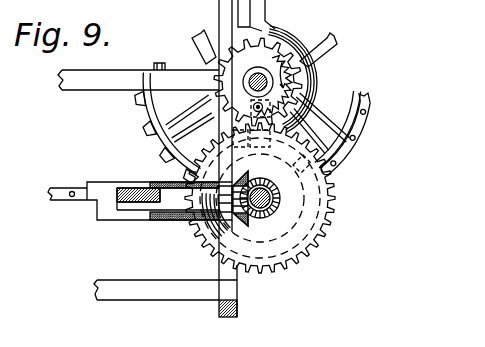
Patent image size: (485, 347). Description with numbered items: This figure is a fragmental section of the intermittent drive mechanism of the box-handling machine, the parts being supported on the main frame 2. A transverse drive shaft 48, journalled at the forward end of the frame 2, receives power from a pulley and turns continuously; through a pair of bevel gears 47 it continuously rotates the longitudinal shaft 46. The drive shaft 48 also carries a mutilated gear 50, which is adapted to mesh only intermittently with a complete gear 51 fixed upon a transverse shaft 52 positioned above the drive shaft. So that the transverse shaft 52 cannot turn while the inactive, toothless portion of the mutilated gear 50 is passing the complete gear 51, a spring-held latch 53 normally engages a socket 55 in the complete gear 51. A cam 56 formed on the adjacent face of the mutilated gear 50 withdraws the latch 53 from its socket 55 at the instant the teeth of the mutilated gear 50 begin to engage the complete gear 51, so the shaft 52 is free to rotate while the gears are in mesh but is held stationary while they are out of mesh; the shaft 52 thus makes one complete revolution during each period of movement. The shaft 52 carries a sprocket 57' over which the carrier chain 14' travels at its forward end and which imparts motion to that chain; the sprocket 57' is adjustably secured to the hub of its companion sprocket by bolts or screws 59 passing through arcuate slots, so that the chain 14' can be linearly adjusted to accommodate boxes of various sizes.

The main frame 2 is at (149, 292).
The carrier chain 14' is at (362, 129).
The longitudinal shaft 46 is at (154, 200).
The bevel gears 47 is at (244, 174).
The transverse drive shaft 48 is at (283, 208).
The mutilated gear 50 is at (333, 212).
The complete gear 51 is at (262, 74).
The transverse shaft 52 is at (282, 44).
The latch 53 is at (368, 114).
The socket 55 is at (268, 114).
The cam 56 is at (342, 179).
The sprocket 57' is at (152, 128).
The bolts or screws 59 is at (314, 62).